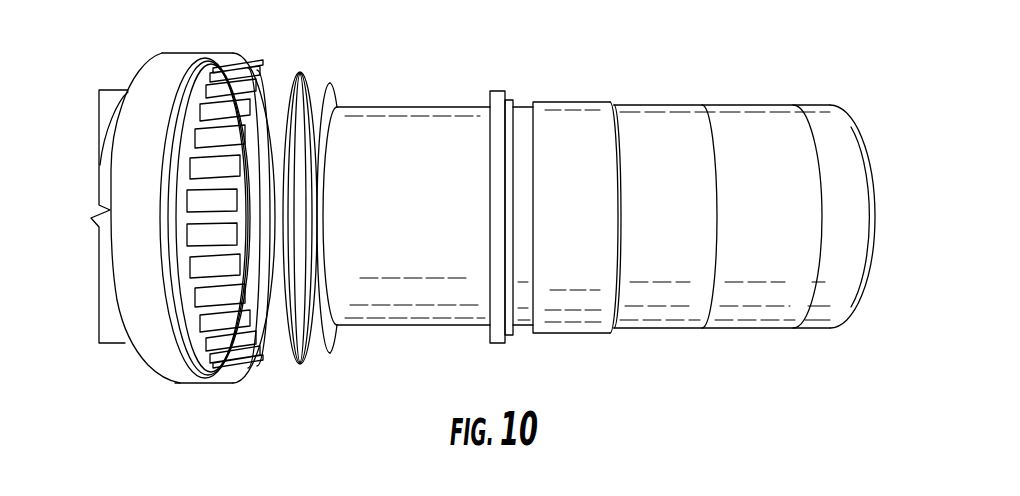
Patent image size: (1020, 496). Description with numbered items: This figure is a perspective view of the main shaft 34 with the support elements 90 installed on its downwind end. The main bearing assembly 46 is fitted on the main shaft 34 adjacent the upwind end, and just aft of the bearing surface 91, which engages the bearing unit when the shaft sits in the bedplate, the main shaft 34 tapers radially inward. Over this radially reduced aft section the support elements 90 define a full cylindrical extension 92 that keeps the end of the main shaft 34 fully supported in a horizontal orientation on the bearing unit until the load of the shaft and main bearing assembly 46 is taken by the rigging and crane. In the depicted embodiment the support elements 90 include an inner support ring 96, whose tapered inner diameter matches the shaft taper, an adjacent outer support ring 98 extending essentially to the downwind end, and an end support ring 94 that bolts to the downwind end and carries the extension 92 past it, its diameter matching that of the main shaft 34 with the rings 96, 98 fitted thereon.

The main bearing assembly 46 is at (238, 65).
The main shaft 34 is at (412, 123).
The bearing surface 91 is at (570, 97).
The extension 92 is at (837, 93).
The inner support ring 96 is at (663, 315).
The outer support ring 98 is at (750, 315).
The end support ring 94 is at (817, 315).
The support elements 90 is at (840, 163).